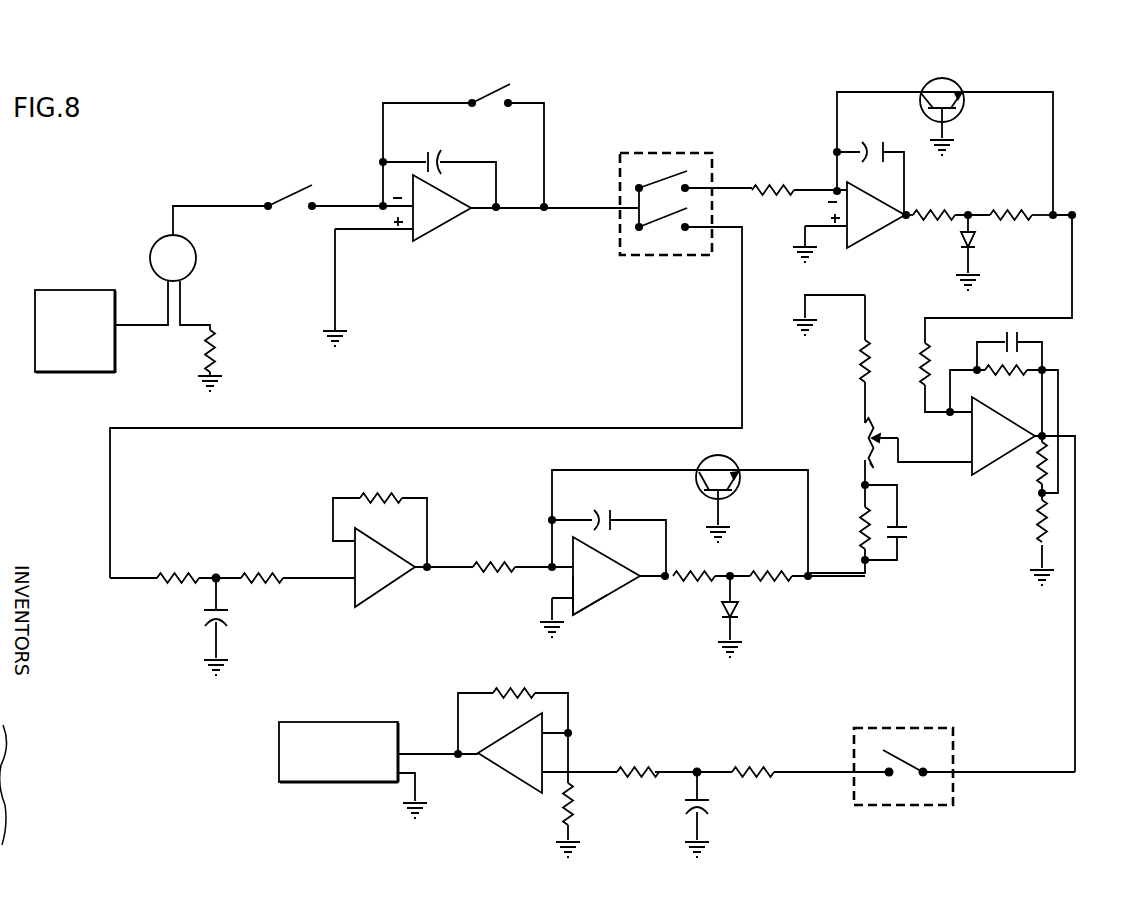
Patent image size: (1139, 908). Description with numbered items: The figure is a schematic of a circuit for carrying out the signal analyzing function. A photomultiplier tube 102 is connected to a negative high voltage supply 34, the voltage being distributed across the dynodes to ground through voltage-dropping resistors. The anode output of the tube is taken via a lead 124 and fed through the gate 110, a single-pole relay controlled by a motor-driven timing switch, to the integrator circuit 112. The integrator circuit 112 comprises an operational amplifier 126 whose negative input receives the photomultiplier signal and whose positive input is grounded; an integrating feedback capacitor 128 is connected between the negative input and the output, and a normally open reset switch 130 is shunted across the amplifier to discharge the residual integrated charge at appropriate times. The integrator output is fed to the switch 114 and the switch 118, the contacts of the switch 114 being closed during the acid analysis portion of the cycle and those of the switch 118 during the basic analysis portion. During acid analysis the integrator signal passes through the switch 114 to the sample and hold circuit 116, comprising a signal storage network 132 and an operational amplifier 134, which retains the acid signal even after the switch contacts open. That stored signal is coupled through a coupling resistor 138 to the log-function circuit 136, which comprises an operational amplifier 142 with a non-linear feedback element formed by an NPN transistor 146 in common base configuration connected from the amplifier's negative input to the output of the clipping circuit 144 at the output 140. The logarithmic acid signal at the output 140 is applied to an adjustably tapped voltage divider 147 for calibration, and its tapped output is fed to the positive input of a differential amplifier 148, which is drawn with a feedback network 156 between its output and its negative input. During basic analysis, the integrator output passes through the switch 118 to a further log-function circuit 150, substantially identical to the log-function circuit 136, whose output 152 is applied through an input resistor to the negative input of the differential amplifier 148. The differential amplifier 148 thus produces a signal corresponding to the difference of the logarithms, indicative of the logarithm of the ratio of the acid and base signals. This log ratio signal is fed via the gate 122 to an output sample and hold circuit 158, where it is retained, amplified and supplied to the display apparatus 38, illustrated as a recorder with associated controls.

The high voltage supply 34 is at (77, 291).
The photomultiplier tube 102 is at (197, 258).
The lead 124 is at (175, 220).
The gate 110 is at (291, 192).
The integrator circuit 112 is at (427, 258).
The operational amplifier 126 is at (447, 212).
The integrating feedback capacitor 128 is at (435, 152).
The reset switch 130 is at (490, 95).
The switch 118 is at (668, 161).
The switch 114 is at (654, 243).
The sample and hold circuit 116 is at (190, 500).
The signal storage network 132 is at (178, 617).
The operational amplifier 134 is at (384, 590).
The coupling resistor 138 is at (480, 574).
The log-function circuit 136 is at (648, 461).
The operational amplifier 142 is at (611, 591).
The clipping circuit 144 is at (696, 619).
The output 140 is at (808, 588).
The NPN transistor 146 is at (730, 461).
The adjustably tapped voltage divider 147 is at (830, 409).
The differential amplifier 148 is at (970, 436).
The log-function circuit 150 is at (822, 88).
The output 152 is at (1076, 214).
The feedback resistor 156 is at (1010, 375).
The output sample and hold circuit 158 is at (588, 718).
The display apparatus 38 is at (332, 722).
The gate 122 is at (905, 745).